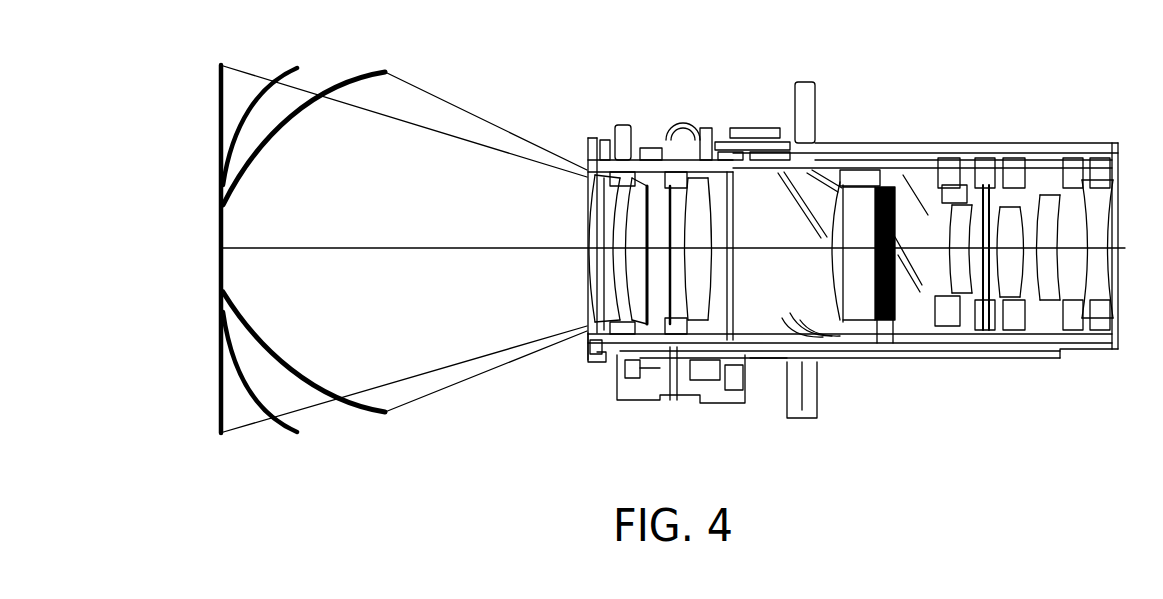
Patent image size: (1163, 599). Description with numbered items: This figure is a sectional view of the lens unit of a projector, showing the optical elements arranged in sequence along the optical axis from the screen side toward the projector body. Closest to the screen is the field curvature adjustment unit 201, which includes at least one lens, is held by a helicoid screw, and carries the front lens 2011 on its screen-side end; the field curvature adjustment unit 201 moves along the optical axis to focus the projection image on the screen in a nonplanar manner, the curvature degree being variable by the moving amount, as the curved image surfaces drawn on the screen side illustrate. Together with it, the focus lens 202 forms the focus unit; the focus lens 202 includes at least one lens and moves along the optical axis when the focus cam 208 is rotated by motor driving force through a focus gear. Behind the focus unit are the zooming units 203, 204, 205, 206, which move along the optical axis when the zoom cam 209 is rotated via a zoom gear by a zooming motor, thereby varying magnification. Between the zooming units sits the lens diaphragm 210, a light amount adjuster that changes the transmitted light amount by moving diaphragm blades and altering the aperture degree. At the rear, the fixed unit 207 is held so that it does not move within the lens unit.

The field curvature adjustment unit 201 is at (652, 182).
The focus lens 202 is at (683, 178).
The zooming unit 203 is at (878, 180).
The zooming unit 204 is at (945, 165).
The zooming unit 205 is at (983, 167).
The zooming unit 206 is at (1017, 167).
The fixed unit 207 is at (1087, 197).
The focus cam 208 is at (713, 320).
The zoom cam 209 is at (905, 290).
The lens diaphragm 210 is at (880, 300).
The front lens 2011 is at (587, 370).